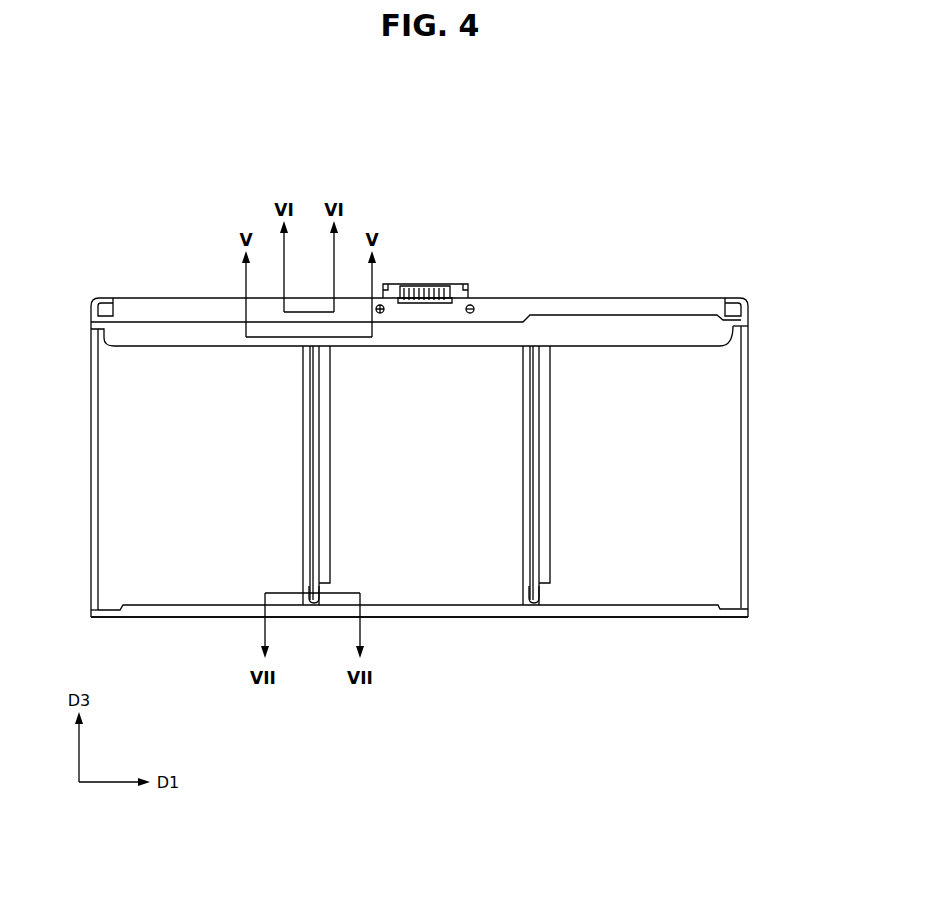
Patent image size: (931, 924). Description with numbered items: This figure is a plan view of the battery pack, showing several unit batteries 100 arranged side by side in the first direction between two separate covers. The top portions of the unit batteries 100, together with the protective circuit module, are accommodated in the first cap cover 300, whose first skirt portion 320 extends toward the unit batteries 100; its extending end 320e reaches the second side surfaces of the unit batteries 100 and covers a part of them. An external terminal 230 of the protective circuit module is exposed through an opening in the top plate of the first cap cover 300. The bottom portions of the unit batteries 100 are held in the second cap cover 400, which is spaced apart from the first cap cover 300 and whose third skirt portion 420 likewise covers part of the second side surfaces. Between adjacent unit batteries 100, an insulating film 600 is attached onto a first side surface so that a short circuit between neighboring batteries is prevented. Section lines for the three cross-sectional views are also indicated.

The unit batteries 100 is at (178, 596).
The external terminal 230 is at (441, 285).
The first cap cover 300 is at (744, 283).
The first skirt portion 320 is at (677, 303).
The extending end of the first skirt portion 320e is at (680, 337).
The second cap cover 400 is at (750, 622).
The third skirt portion 420 is at (693, 606).
The insulating film 600 is at (330, 572).